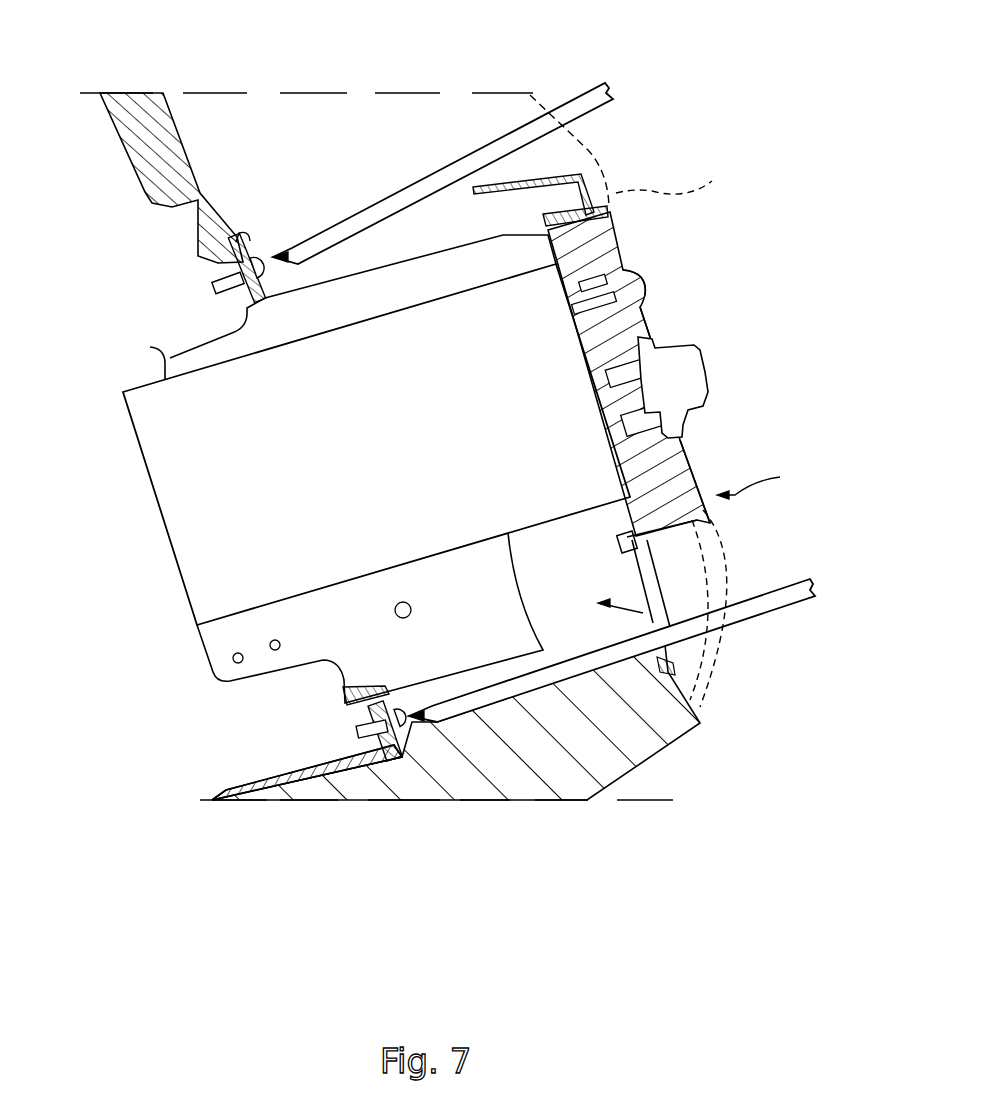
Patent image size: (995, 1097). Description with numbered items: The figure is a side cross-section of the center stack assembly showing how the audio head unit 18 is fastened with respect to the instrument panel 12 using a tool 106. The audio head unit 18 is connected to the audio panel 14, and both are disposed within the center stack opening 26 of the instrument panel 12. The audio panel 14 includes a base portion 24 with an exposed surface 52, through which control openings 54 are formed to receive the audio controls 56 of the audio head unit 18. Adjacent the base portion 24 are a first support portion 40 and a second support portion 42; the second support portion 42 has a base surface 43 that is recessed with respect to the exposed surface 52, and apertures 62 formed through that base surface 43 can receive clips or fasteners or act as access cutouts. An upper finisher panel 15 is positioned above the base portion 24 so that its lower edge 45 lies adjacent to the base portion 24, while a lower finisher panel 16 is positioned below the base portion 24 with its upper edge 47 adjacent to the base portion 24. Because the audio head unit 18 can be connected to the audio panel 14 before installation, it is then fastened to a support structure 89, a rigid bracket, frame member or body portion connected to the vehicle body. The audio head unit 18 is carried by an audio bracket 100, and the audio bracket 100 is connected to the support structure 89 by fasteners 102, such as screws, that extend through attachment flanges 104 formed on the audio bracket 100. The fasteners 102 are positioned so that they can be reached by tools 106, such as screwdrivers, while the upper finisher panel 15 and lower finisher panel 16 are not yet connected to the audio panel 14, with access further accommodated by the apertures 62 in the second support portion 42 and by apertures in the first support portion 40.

The instrument panel 12 is at (692, 778).
The audio panel 14 is at (759, 479).
The upper finisher panel 15 is at (606, 149).
The lower finisher panel 16 is at (732, 702).
The audio head unit 18 is at (142, 452).
The base portion 24 is at (677, 453).
The center stack opening 26 is at (637, 587).
The first support portion 40 is at (598, 183).
The second support portion 42 is at (673, 663).
The base surface 43 is at (643, 613).
The lower edge 45 is at (677, 178).
The upper edge 47 is at (720, 528).
The exposed surface 52 is at (628, 247).
The control openings 54 is at (640, 338).
The audio controls 56 is at (645, 270).
The apertures 62 is at (637, 550).
The support structure 89 is at (139, 183).
The audio bracket 100 is at (167, 353).
The fasteners 102 is at (254, 266).
The attachment flanges 104 is at (250, 250).
The tools 106 is at (573, 99).